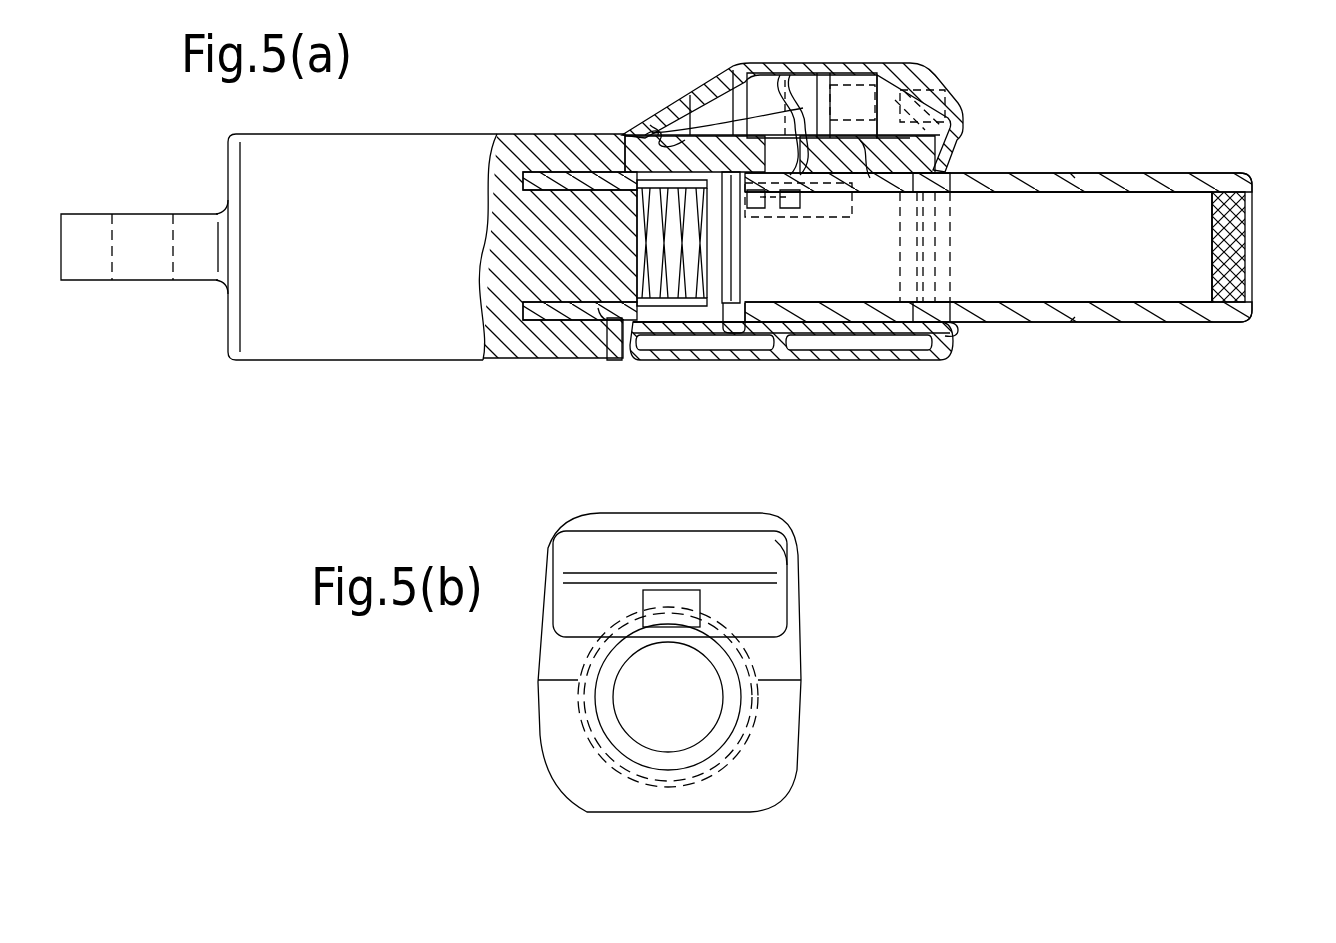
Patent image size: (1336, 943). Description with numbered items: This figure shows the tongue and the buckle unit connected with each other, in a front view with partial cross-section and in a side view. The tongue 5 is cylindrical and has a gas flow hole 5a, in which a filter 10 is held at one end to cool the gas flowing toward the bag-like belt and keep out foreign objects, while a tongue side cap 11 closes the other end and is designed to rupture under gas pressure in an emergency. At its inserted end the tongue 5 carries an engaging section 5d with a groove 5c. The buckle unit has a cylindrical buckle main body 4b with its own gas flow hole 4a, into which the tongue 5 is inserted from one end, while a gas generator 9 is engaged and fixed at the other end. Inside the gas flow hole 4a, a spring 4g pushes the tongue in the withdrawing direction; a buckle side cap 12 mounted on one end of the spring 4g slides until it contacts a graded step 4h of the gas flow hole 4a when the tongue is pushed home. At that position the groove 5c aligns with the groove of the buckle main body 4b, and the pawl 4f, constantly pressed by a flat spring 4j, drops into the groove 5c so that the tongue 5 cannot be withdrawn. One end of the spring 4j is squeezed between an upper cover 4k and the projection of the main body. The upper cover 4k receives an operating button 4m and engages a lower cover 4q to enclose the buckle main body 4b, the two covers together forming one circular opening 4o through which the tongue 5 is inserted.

In FIG. 5a, the gas generator 9 is at (355, 362).
In FIG. 5a, the gas flow hole 4a is at (580, 258).
In FIG. 5a, the buckle main body 4b is at (652, 126).
In FIG. 5a, the spring 4j is at (757, 74).
In FIG. 5a, the pawl 4f is at (790, 74).
In FIG. 5a, the upper cover 4k is at (845, 76).
In FIG. 5b, the upper cover 4k is at (768, 526).
In FIG. 5a, the operating button 4m is at (947, 88).
In FIG. 5b, the operating button 4m is at (765, 553).
In FIG. 5a, the tongue 5 is at (1052, 172).
In FIG. 5b, the tongue 5 is at (740, 742).
In FIG. 5a, the gas flow hole 5a is at (1062, 265).
In FIG. 5a, the groove 5c is at (826, 208).
In FIG. 5a, the engaging section 5d is at (868, 186).
In FIG. 5b, the engaging section 5d is at (692, 608).
In FIG. 5a, the filter 10 is at (1252, 258).
In FIG. 5a, the opening 4o is at (937, 202).
In FIG. 5a, the tongue side cap 11 is at (736, 262).
In FIG. 5a, the buckle side cap 12 is at (712, 330).
In FIG. 5a, the spring 4g is at (616, 350).
In FIG. 5a, the graded step 4h is at (746, 334).
In FIG. 5a, the lower cover 4q is at (898, 362).
In FIG. 5b, the lower cover 4q is at (760, 780).